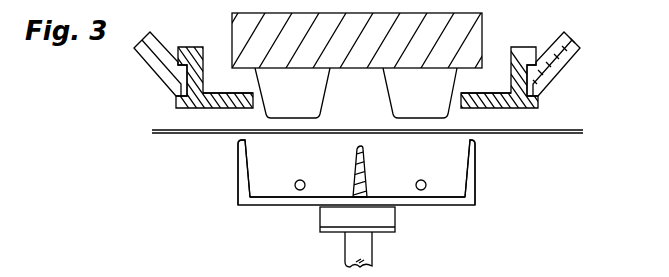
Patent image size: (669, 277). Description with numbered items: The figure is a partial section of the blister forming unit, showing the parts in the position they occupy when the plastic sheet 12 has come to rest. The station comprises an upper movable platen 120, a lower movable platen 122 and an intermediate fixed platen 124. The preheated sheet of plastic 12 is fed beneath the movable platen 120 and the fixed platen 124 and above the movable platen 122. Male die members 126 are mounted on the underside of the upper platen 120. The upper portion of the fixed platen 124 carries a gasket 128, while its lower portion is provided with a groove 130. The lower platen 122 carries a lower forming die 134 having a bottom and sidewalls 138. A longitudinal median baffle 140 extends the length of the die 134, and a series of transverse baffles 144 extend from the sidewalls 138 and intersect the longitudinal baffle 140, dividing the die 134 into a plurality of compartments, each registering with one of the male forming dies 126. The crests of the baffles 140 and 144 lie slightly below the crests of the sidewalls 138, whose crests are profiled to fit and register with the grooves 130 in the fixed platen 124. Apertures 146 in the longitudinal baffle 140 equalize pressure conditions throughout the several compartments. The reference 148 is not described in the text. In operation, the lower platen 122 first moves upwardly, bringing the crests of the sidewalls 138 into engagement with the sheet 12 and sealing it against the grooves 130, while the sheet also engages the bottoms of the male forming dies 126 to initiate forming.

The sheet of plastic 12 is at (583, 135).
The upper movable platen 120 is at (482, 20).
The lower movable platen 122 is at (398, 222).
The intermediate fixed platen 124 is at (137, 62).
The male die members 126 is at (356, 94).
The gasket 128 is at (242, 92).
The groove 130 is at (244, 109).
The lower forming die 134 is at (262, 208).
The sidewalls 138 is at (237, 167).
The longitudinal median baffle 140 is at (365, 168).
The transverse baffles 144 is at (357, 171).
The apertures 146 is at (294, 186).
The divider base 148 is at (367, 183).